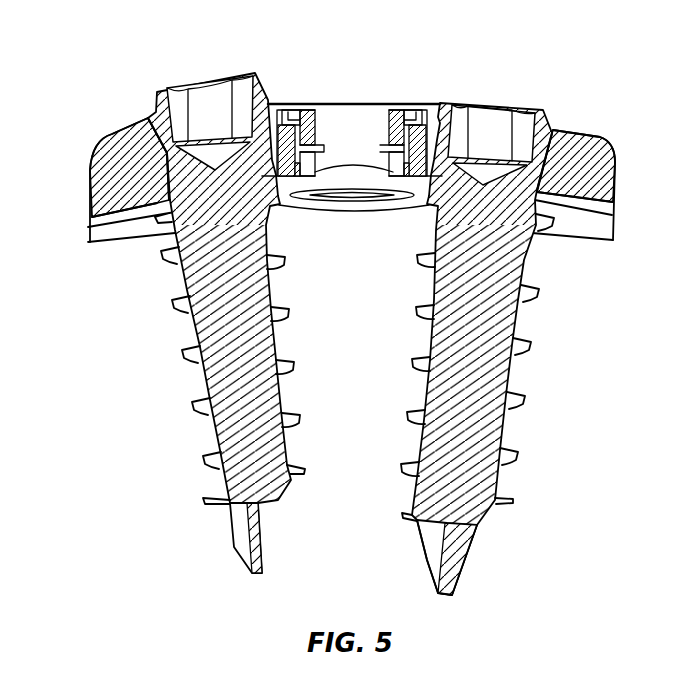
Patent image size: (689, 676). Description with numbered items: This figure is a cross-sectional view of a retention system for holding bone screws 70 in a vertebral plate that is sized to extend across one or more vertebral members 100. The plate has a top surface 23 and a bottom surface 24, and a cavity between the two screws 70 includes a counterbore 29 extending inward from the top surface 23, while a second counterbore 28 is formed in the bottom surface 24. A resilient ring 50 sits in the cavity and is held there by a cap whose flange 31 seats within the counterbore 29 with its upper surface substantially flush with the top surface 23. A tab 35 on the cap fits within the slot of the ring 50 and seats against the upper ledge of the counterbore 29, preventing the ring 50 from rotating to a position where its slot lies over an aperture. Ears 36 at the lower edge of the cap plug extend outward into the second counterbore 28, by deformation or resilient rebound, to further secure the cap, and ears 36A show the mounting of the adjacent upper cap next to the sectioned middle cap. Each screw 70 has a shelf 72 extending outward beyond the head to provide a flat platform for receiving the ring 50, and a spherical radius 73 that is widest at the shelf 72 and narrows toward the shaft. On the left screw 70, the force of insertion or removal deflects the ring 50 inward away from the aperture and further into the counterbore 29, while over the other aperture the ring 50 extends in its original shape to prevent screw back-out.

The top surface 23 is at (125, 133).
The bottom surface 24 is at (90, 228).
The second counterbore 28 is at (297, 165).
The counterbore 29 is at (305, 112).
The flange 31 is at (403, 112).
The tab 35 is at (322, 147).
The ears 36 is at (354, 163).
The ears 36A is at (304, 196).
The ring 50 is at (291, 110).
The screw 70 is at (212, 427).
The shelf 72 is at (274, 103).
The spherical radius 73 is at (150, 125).
The vertebral members 100 is at (366, 404).